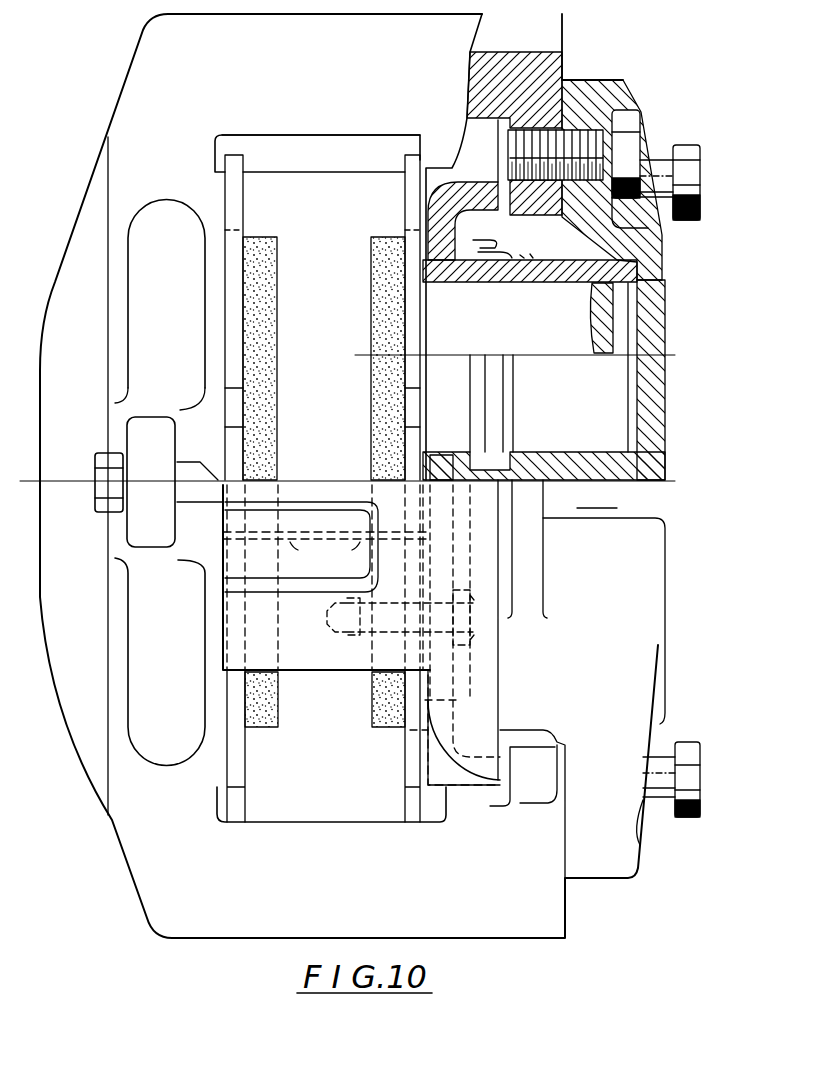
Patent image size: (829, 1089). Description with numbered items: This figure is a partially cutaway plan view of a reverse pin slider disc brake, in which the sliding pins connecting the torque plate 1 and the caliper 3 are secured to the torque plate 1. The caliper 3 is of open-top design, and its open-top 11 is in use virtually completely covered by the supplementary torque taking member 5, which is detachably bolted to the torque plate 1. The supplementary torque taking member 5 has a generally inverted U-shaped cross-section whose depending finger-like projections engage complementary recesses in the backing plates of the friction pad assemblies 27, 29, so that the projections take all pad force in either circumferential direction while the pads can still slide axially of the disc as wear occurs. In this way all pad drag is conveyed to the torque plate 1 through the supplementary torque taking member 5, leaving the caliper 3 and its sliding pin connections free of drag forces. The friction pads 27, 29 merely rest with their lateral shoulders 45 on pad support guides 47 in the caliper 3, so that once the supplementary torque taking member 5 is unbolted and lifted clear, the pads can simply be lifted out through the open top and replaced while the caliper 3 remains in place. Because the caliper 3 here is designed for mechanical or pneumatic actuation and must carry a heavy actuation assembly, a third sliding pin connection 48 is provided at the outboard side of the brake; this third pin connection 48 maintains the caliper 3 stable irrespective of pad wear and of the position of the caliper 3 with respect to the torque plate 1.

The torque plate 1 is at (457, 165).
The caliper 3 is at (143, 878).
The supplementary torque taking member 5 is at (315, 650).
The open-top 11 is at (332, 225).
The friction pad assembly 27 is at (258, 412).
The friction pad assembly 29 is at (385, 342).
The lateral shoulders 45 is at (230, 167).
The pad support guides 47 is at (338, 147).
The third sliding pin connection 48 is at (150, 476).